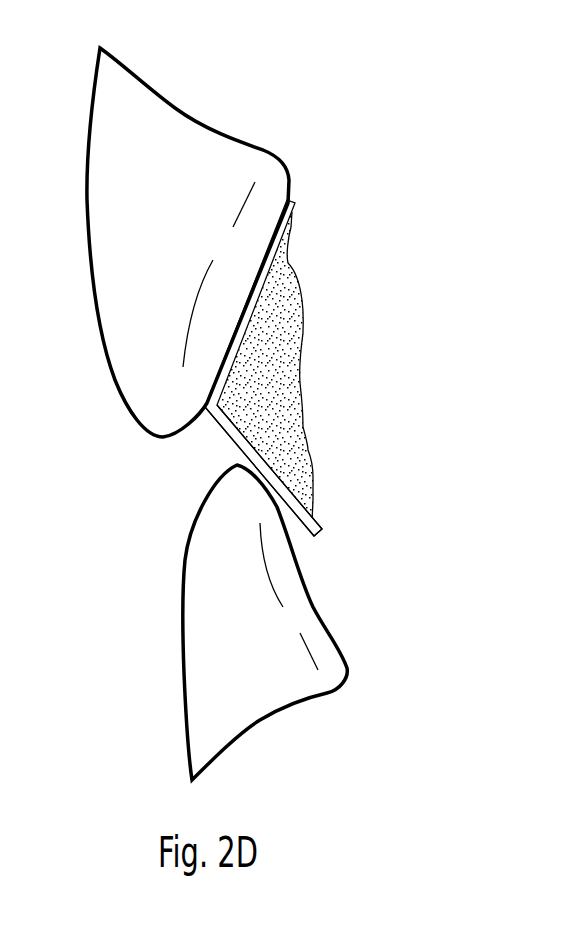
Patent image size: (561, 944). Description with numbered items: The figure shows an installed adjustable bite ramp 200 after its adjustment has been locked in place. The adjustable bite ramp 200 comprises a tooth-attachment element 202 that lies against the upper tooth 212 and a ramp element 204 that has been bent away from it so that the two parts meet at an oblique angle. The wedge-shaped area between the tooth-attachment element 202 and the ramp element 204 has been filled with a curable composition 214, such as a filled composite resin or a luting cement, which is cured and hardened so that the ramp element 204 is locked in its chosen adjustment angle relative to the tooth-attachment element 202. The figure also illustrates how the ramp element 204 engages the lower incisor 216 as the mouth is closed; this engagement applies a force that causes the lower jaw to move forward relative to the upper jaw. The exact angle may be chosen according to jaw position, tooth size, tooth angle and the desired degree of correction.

The adjustable bite ramp 200 is at (392, 360).
The tooth-attachment element 202 is at (289, 203).
The ramp element 204 is at (298, 510).
The upper tooth 212 is at (160, 137).
The curable composition 214 is at (278, 343).
The lower incisor 216 is at (260, 628).